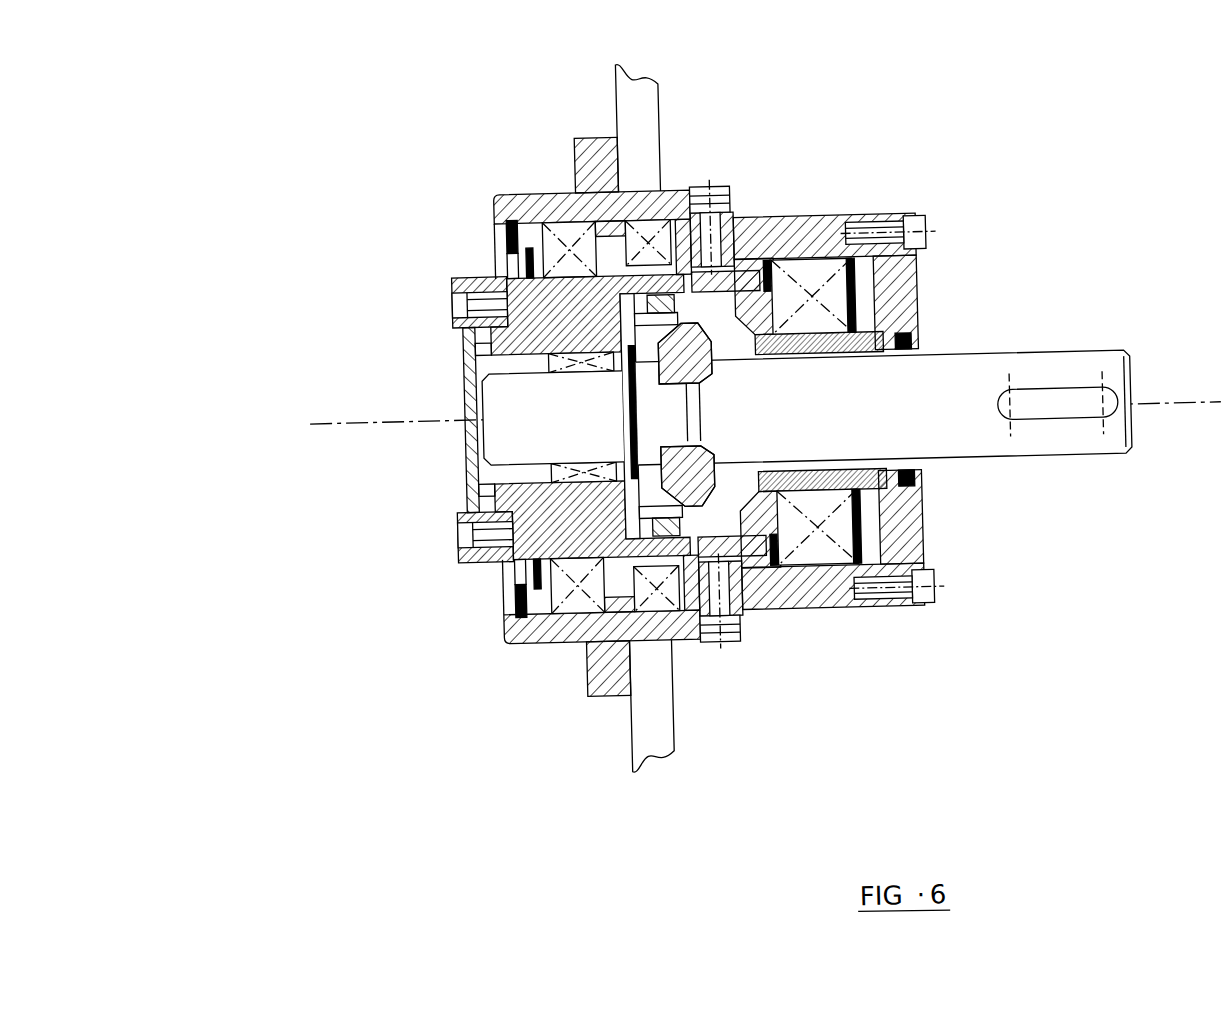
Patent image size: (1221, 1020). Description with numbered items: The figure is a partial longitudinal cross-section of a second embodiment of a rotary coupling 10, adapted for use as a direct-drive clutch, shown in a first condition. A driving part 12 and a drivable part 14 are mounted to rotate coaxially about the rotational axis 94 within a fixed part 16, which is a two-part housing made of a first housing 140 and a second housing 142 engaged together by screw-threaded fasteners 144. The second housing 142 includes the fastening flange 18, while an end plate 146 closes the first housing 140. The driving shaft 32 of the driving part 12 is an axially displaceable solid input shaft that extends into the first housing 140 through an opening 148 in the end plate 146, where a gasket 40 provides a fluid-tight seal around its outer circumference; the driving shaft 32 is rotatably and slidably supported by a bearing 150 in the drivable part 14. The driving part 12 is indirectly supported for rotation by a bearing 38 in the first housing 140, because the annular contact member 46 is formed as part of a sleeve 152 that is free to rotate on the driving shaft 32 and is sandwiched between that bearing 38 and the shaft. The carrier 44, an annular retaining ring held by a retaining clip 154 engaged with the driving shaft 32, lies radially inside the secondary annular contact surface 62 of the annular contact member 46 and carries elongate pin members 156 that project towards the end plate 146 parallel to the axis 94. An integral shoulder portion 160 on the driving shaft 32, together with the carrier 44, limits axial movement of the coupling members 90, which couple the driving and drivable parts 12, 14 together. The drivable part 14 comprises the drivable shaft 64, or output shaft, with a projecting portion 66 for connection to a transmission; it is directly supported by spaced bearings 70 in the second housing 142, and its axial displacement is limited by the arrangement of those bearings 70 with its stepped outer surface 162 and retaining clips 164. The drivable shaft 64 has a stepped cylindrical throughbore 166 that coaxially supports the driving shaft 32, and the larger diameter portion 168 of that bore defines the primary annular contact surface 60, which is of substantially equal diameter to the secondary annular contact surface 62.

The rotary coupling 10 is at (444, 116).
The driving part 12 is at (1023, 258).
The drivable part 14 is at (427, 231).
The fixed part 16 is at (811, 170).
The fastening flange 18 is at (619, 661).
The driving shaft 32 is at (1102, 360).
The bearing 38 is at (836, 588).
The gasket 40 is at (921, 475).
The carrier 44 is at (632, 297).
The annular contact member 46 is at (796, 602).
The primary annular contact surface 60 is at (606, 638).
The secondary annular contact surface 62 is at (735, 600).
The drivable shaft 64 is at (461, 275).
The projecting portion 66 is at (486, 558).
The bearings 70 is at (567, 602).
The coupling members 90 is at (658, 598).
The rotational axis 94 is at (310, 415).
The first housing 140 is at (860, 219).
The second housing 142 is at (510, 188).
The screw-threaded fasteners 144 is at (739, 641).
The end plate 146 is at (924, 538).
The opening 148 is at (921, 450).
The bearing 150 is at (478, 352).
The sleeve 152 is at (809, 296).
The retaining clip 154 is at (584, 292).
The pin members 156 is at (688, 285).
The shoulder portion 160 is at (800, 563).
The stepped outer surface 162 is at (493, 275).
The retaining clips 164 is at (496, 565).
The stepped cylindrical throughbore 166 is at (504, 466).
The larger diameter portion 168 is at (651, 706).